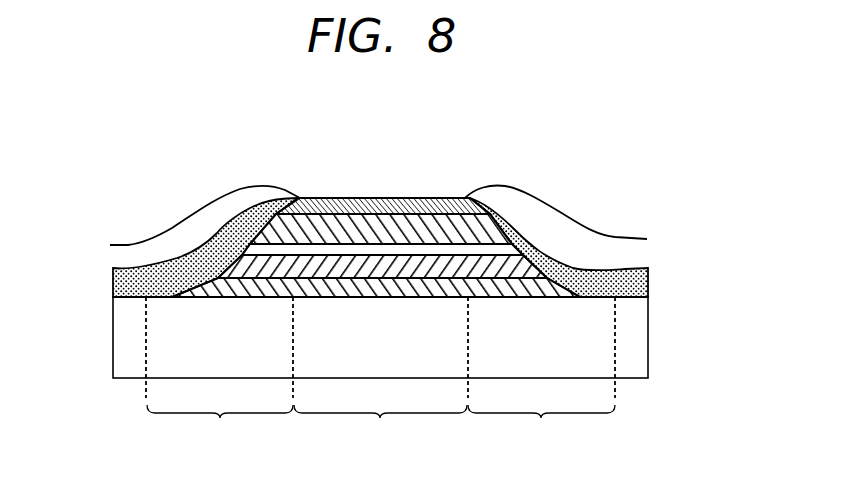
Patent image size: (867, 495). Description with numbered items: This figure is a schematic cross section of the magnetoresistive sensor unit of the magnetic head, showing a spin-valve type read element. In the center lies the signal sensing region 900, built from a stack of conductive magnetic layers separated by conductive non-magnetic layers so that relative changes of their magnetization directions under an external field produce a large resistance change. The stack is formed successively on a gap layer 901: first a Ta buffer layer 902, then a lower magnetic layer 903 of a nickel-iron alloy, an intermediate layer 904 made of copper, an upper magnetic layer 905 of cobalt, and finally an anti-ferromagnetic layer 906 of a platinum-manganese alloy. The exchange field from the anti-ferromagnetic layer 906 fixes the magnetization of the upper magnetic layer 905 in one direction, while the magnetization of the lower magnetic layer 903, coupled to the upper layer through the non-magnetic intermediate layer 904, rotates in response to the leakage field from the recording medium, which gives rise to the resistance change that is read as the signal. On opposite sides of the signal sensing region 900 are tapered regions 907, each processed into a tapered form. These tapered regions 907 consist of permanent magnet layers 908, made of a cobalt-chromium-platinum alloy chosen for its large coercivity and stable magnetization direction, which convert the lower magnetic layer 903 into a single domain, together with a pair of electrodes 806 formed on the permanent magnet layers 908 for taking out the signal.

The electrodes 806 is at (223, 213).
The signal sensing region 900 is at (380, 428).
The gap layer 901 is at (638, 340).
The Ta buffer layer 902 is at (412, 283).
The lower magnetic layer 903 is at (450, 268).
The intermediate layer 904 is at (378, 250).
The upper magnetic layer 905 is at (343, 228).
The anti-ferromagnetic layer 906 is at (312, 207).
The tapered regions 907 is at (380, 374).
The permanent magnet layers 908 is at (202, 253).